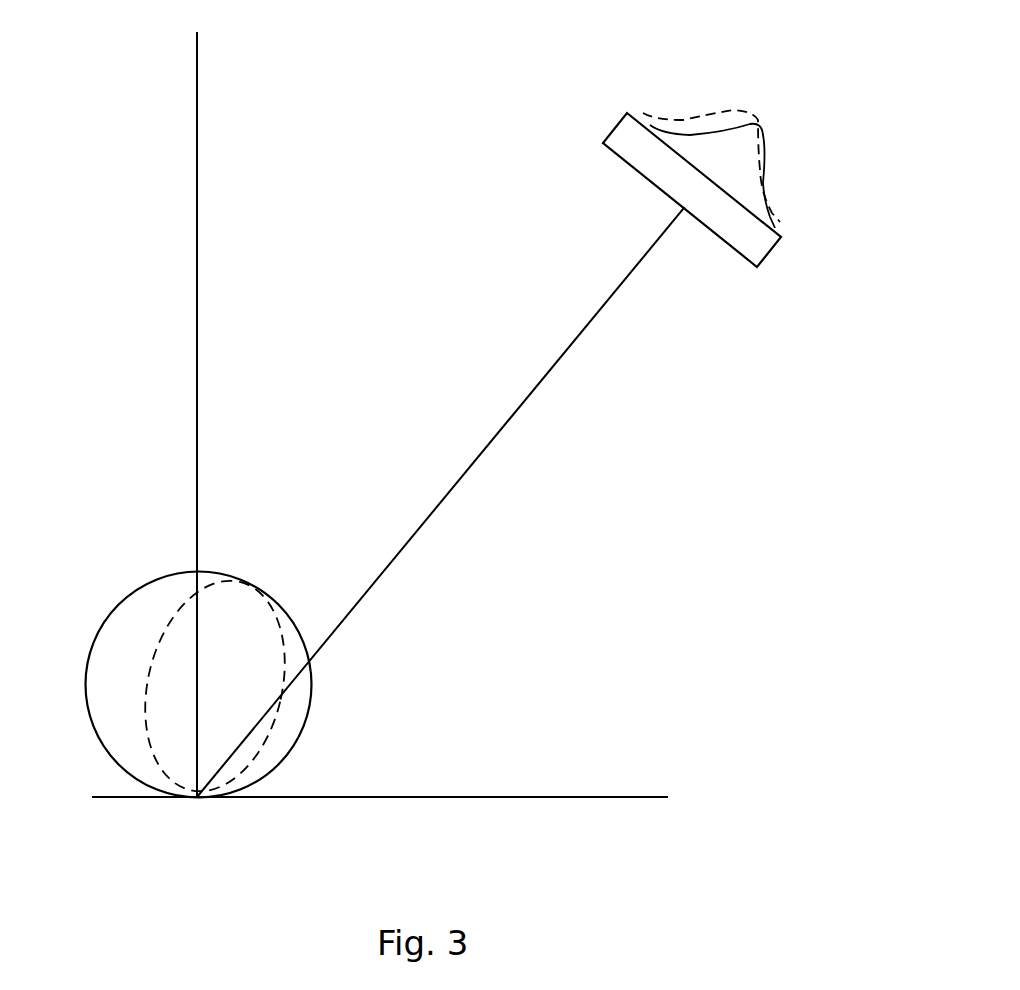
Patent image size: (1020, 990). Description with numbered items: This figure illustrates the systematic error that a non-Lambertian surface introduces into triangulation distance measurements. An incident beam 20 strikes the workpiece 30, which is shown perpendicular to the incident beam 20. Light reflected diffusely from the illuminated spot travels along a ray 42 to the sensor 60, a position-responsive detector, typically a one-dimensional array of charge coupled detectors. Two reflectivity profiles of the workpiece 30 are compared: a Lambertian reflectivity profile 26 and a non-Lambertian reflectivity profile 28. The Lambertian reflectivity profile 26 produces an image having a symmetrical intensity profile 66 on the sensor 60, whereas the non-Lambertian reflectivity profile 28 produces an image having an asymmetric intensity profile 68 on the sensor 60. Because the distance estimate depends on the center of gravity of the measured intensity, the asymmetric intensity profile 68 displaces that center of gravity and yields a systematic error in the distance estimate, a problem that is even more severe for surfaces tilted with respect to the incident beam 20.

The incident beam 20 is at (198, 278).
The Lambertian reflectivity profile 26 is at (107, 612).
The non-Lambertian reflectivity profile 28 is at (282, 667).
The workpiece 30 is at (423, 797).
The ray 42 is at (552, 375).
The sensor 60 is at (773, 250).
The symmetrical intensity profile 66 is at (767, 163).
The asymmetric intensity profile 68 is at (688, 115).